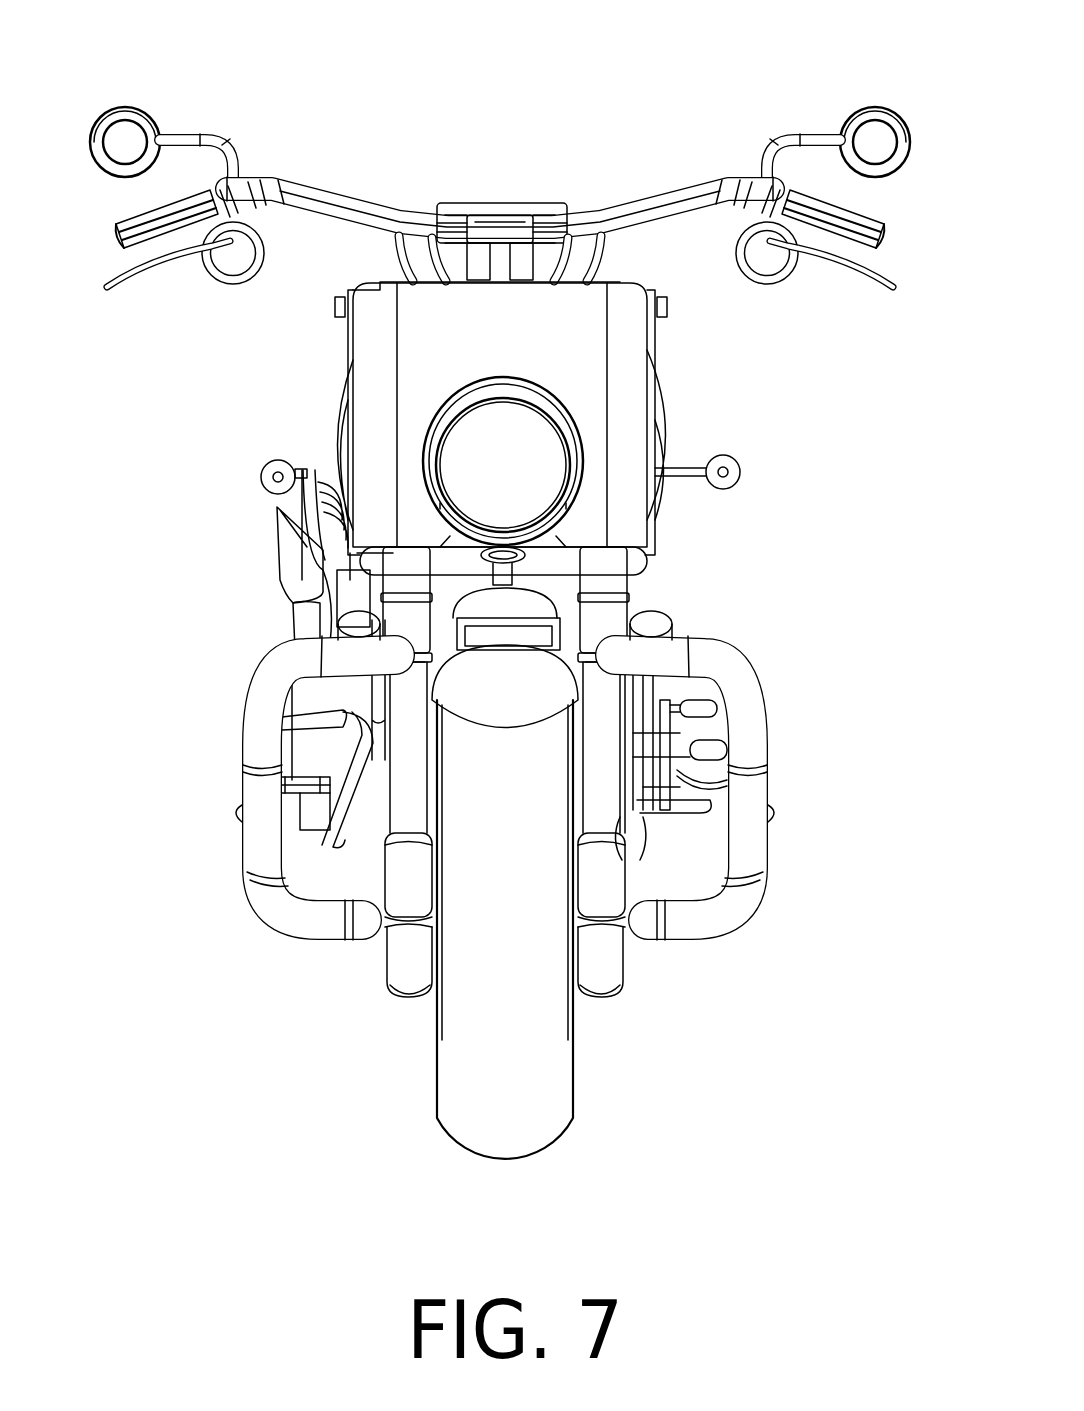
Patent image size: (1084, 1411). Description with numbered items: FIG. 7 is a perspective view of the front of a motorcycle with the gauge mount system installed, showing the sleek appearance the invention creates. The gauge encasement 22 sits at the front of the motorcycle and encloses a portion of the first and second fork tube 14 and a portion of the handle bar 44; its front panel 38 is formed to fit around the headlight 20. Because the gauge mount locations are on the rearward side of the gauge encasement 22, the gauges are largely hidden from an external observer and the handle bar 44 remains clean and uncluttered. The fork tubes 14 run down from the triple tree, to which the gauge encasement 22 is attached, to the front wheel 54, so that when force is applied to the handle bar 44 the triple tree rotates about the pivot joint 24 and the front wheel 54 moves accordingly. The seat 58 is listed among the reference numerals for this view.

The fork tube 14 is at (600, 762).
The headlight 20 is at (472, 463).
The gauge encasement 22 is at (680, 415).
The pivot joint 24 is at (505, 553).
The front panel 38 is at (415, 348).
The handle bar 44 is at (443, 205).
The front wheel 54 is at (510, 962).
The seat 58 is at (550, 210).